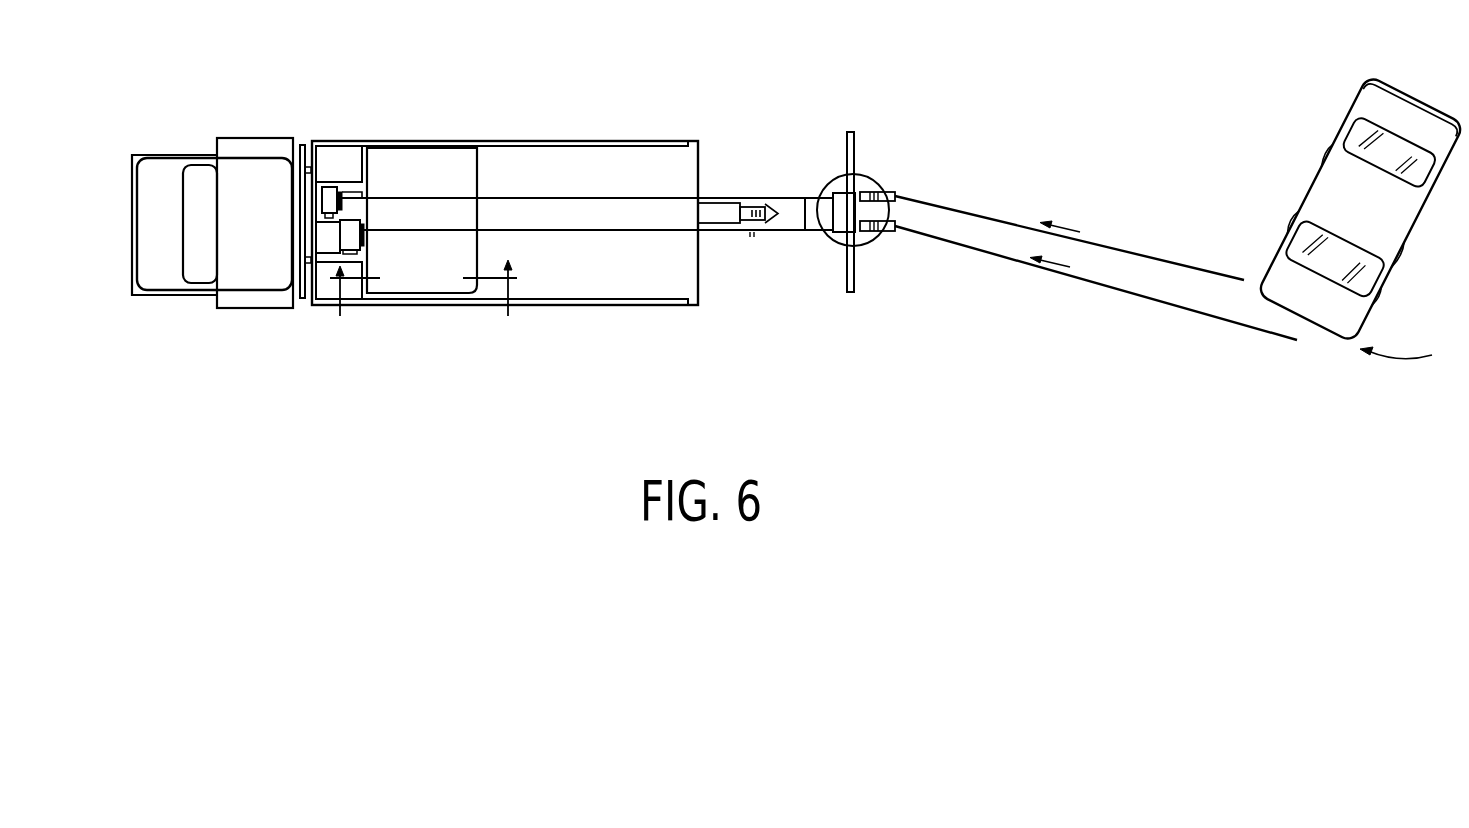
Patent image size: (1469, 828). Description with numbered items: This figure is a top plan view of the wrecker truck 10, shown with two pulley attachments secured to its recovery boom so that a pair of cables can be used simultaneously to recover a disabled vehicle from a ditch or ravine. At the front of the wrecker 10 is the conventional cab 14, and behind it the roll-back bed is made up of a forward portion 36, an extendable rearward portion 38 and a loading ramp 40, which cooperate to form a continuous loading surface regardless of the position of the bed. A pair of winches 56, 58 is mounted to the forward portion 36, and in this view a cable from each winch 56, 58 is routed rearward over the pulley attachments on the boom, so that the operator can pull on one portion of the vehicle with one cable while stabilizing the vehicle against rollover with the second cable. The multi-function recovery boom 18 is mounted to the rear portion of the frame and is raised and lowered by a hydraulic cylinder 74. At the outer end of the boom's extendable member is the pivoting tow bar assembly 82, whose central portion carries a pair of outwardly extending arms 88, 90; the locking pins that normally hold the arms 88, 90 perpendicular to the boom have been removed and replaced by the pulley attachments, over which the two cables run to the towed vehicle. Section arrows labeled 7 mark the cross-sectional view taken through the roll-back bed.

The section line 7- 7 is at (427, 304).
The wrecker truck 10 is at (366, 377).
The cab 14 is at (243, 168).
The multi-function recovery boom 18 is at (748, 236).
The forward portion 36 is at (325, 155).
The rearward portion 38 is at (508, 167).
The loading ramp 40 is at (445, 172).
The winch 56 is at (329, 190).
The winch 58 is at (352, 227).
The hydraulic cylinder 74 is at (715, 203).
The tow bar assembly 82 is at (877, 192).
The outwardly extending arm 88 is at (855, 148).
The outwardly extending arm 90 is at (856, 272).